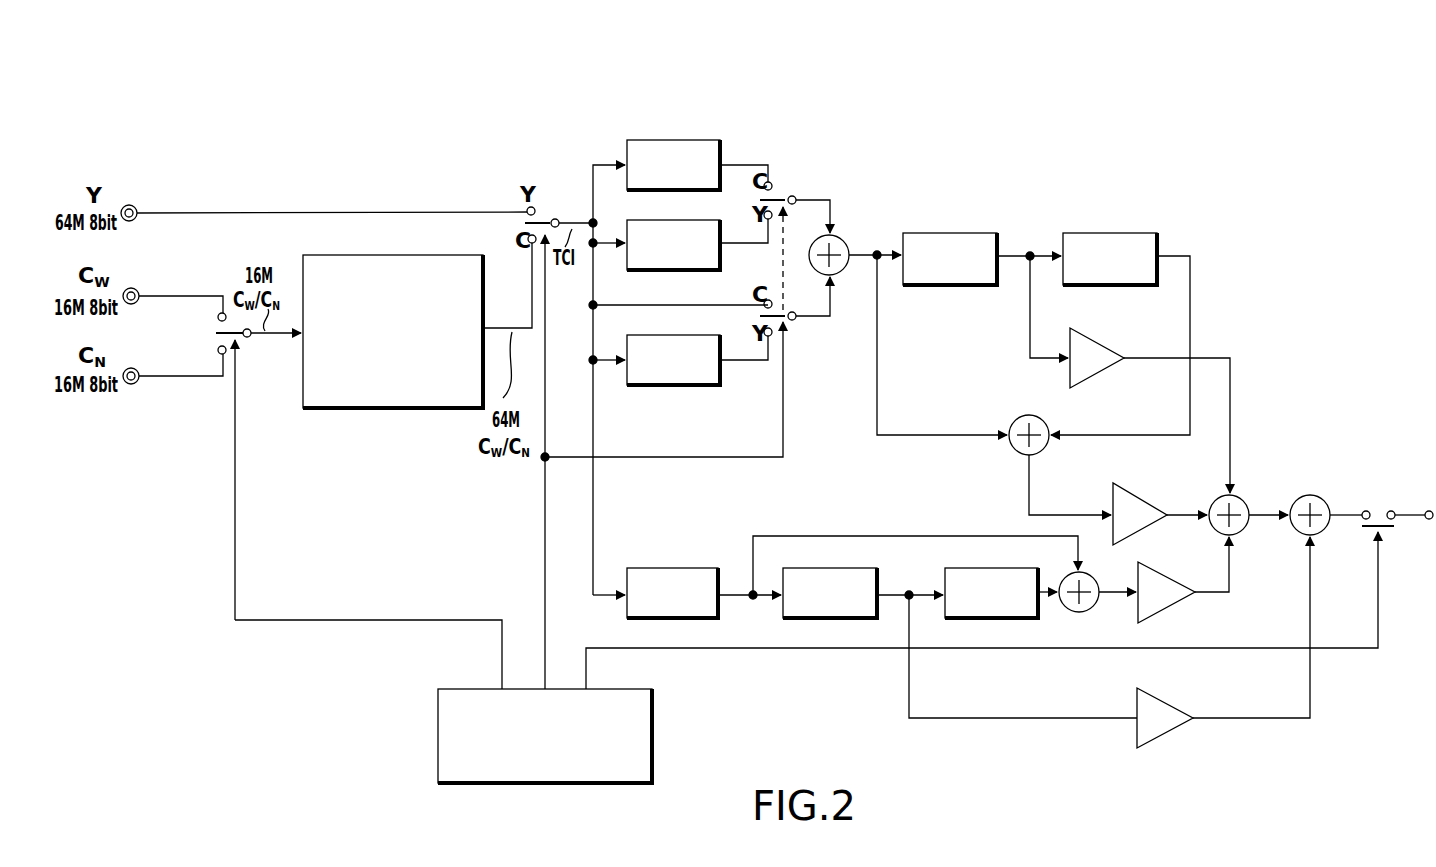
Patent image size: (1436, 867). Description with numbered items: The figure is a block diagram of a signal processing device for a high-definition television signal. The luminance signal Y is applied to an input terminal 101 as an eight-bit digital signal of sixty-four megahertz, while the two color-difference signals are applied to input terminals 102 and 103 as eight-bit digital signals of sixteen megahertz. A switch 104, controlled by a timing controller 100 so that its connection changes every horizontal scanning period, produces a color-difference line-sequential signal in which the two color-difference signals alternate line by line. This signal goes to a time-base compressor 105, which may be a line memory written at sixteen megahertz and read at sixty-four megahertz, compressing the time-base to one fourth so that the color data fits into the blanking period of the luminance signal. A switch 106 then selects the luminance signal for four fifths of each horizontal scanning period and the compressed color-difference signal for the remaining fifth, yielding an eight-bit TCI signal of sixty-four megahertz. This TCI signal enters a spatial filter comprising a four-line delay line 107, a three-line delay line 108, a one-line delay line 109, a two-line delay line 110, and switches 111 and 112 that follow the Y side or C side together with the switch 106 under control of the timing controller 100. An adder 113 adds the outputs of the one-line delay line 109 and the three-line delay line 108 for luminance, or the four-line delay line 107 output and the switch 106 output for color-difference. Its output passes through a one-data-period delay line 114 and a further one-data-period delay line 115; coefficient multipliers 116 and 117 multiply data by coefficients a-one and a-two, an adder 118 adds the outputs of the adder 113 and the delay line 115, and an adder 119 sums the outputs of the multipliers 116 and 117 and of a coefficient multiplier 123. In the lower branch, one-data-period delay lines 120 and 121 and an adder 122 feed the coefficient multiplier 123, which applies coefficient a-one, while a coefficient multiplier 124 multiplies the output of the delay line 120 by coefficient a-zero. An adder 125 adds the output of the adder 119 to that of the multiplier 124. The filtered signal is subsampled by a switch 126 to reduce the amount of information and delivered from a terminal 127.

The timing controller 100 is at (438, 725).
The input terminal 101 is at (132, 205).
The input terminal 102 is at (134, 288).
The input terminal 103 is at (134, 368).
The switch 104 is at (263, 338).
The time-base compressor 105 is at (362, 409).
The switch 106 is at (537, 206).
The 4H delay line 107 is at (690, 140).
The 3H delay line 108 is at (680, 270).
The 1H delay line 109 is at (685, 385).
The 2H delay line 110 is at (672, 568).
The switch 111 is at (778, 192).
The switch 112 is at (792, 330).
The adder 113 is at (845, 241).
The 1 data period delay line 114 is at (965, 233).
The 1 data period delay line 115 is at (1122, 233).
The coefficient multiplier 116 is at (1092, 341).
The coefficient multiplier 117 is at (1142, 491).
The adder 118 is at (1024, 415).
The adder 119 is at (1241, 493).
The 1 data period delay line 120 is at (782, 612).
The 1 data period delay line 121 is at (945, 572).
The adder 122 is at (1072, 612).
The coefficient multiplier 123 is at (1178, 605).
The coefficient multiplier 124 is at (1163, 735).
The adder 125 is at (1310, 494).
The switch 126 is at (1372, 508).
The terminal 127 is at (1428, 510).